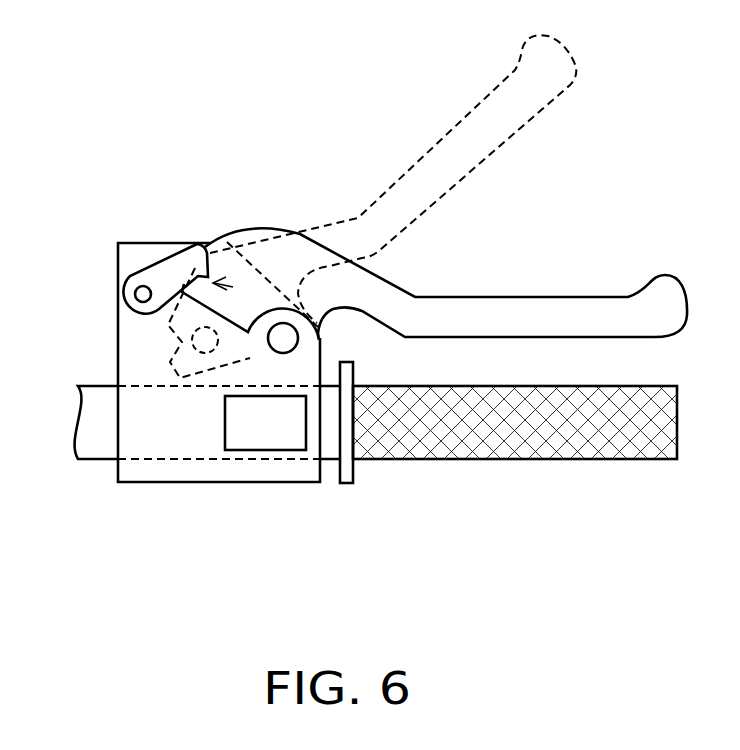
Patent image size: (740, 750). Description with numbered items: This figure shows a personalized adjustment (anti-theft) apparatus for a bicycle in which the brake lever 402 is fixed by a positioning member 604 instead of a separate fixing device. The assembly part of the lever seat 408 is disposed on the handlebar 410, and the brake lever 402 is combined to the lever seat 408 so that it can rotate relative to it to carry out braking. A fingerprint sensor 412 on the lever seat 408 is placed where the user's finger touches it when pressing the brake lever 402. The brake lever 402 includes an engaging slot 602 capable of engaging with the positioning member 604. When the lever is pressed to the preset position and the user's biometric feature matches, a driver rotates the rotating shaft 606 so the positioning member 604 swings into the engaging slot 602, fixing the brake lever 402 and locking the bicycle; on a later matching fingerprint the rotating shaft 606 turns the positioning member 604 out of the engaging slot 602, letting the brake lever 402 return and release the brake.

The brake lever 402 is at (535, 295).
The lever seat 408 is at (117, 246).
The handlebar 410 is at (592, 437).
The fingerprint sensor 412 is at (263, 432).
The engaging slot 602 is at (233, 287).
The positioning member 604 is at (205, 245).
The rotating shaft 606 is at (135, 294).